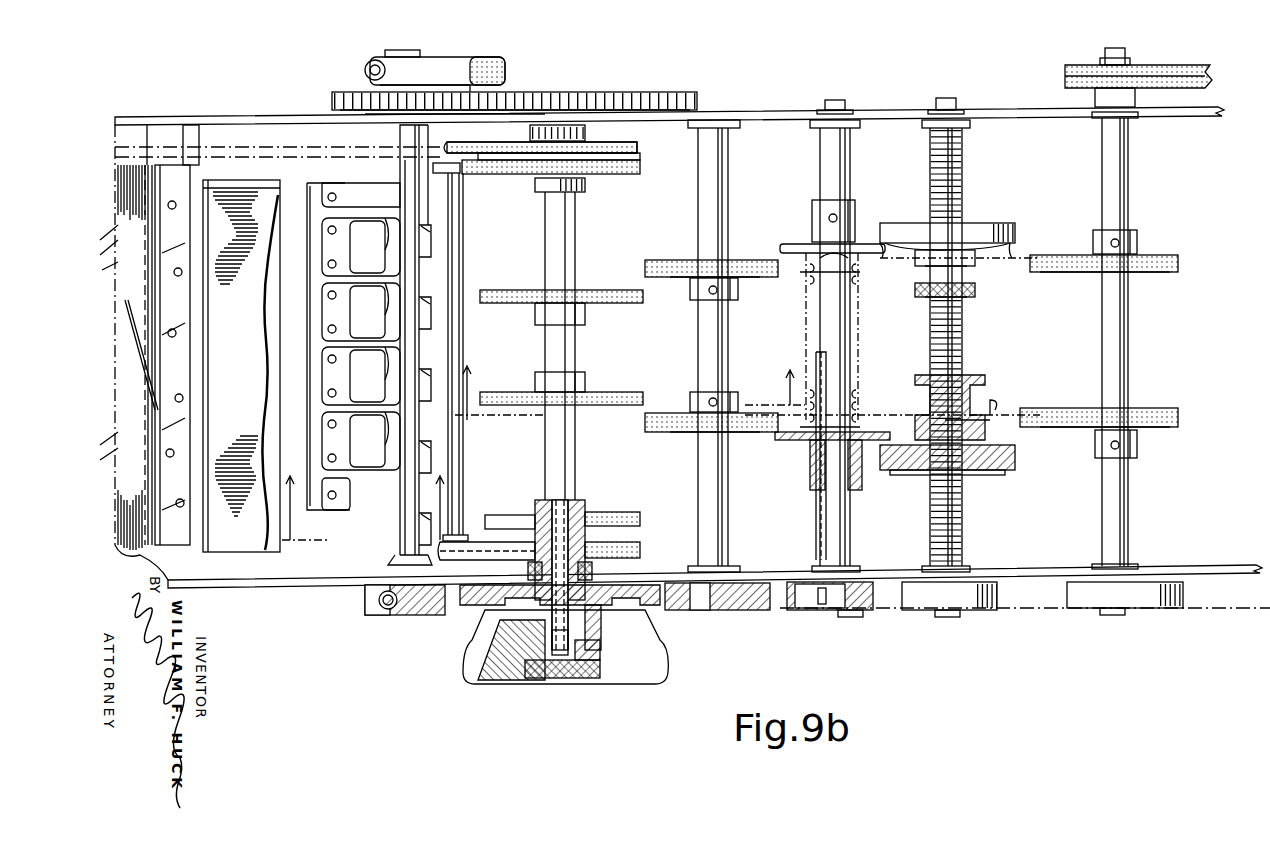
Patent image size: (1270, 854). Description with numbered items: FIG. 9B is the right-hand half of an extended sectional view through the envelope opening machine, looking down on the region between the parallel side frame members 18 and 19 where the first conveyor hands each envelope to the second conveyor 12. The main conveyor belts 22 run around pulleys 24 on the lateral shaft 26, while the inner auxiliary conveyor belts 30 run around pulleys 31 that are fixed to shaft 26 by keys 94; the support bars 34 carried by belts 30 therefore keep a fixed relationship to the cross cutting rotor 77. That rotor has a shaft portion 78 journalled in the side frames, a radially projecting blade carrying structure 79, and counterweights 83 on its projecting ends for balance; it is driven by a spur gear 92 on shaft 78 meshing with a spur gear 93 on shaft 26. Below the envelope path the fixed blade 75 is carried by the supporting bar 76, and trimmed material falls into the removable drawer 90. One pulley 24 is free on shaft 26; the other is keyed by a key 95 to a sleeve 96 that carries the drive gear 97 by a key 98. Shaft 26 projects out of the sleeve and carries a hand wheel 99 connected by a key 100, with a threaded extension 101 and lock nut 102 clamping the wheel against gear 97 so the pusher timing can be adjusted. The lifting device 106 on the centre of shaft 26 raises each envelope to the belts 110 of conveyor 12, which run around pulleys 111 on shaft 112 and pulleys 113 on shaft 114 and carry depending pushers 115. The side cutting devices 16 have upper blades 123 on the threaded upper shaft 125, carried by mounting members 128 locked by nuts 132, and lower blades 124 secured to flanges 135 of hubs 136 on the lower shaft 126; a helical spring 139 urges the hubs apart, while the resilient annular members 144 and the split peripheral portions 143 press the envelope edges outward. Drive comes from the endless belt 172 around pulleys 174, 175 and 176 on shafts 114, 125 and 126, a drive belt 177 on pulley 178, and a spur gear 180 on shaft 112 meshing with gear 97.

The second conveyor 12 is at (543, 439).
The side cutting device 16 is at (998, 222).
The side frame member 18 is at (765, 112).
The side frame member 19 is at (782, 548).
The main conveyor belt 22 is at (466, 143).
The pulley 24 is at (630, 150).
The shaft 26 is at (548, 262).
The auxiliary conveyor belt 30 is at (462, 174).
The pulley 31 is at (618, 177).
The support bar 34 is at (460, 268).
The fixed blade 75 is at (182, 374).
The supporting bar 76 is at (175, 572).
The rotor 77 is at (368, 205).
The shaft portion 78 is at (426, 380).
The blade carrying structure 79 is at (350, 498).
The counterweight 83 is at (455, 66).
The drawer 90 is at (250, 540).
The spur gear 92 is at (366, 78).
The spur gear 93 is at (552, 94).
The key 94 is at (548, 500).
The key 95 is at (585, 528).
The sleeve 96 is at (538, 518).
The drive gear 97 is at (648, 600).
The key 98 is at (602, 627).
The hand wheel 99 is at (665, 665).
The key 100 is at (548, 628).
The threaded extension 101 is at (592, 660).
The lock nut 102 is at (552, 678).
The lifting device 106 is at (528, 324).
The conveyor belt 110 is at (700, 430).
The pulley 111 is at (680, 280).
The shaft 112 is at (722, 186).
The pulley 113 is at (1150, 273).
The shaft 114 is at (1120, 358).
The pusher 115 is at (648, 268).
The upper circular cutting blade 123 is at (1010, 243).
The lower circular cutting blade 124 is at (800, 250).
The upper shaft 125 is at (958, 175).
The lower shaft 126 is at (840, 165).
The mounting member 128 is at (898, 470).
The lock nut 132 is at (975, 280).
The radial flange 135 is at (812, 242).
The hub 136 is at (848, 212).
The helical spring 139 is at (860, 352).
The split peripheral portion 143 is at (978, 270).
The resilient annular member 144 is at (868, 270).
The endless belt 172 is at (1048, 612).
The pulley 174 is at (1088, 612).
The pulley 175 is at (912, 612).
The pulley 176 is at (797, 612).
The drive belt 177 is at (1178, 78).
The pulley 178 is at (1080, 65).
The spur gear 180 is at (740, 605).